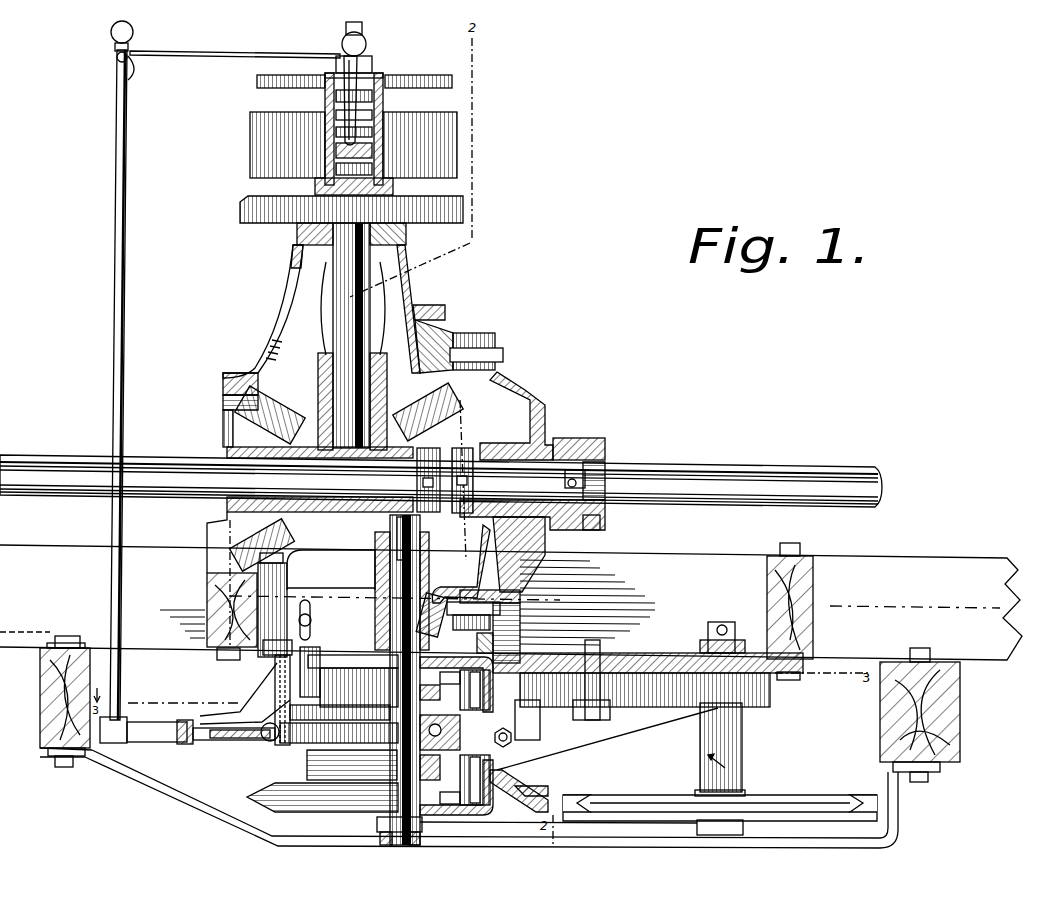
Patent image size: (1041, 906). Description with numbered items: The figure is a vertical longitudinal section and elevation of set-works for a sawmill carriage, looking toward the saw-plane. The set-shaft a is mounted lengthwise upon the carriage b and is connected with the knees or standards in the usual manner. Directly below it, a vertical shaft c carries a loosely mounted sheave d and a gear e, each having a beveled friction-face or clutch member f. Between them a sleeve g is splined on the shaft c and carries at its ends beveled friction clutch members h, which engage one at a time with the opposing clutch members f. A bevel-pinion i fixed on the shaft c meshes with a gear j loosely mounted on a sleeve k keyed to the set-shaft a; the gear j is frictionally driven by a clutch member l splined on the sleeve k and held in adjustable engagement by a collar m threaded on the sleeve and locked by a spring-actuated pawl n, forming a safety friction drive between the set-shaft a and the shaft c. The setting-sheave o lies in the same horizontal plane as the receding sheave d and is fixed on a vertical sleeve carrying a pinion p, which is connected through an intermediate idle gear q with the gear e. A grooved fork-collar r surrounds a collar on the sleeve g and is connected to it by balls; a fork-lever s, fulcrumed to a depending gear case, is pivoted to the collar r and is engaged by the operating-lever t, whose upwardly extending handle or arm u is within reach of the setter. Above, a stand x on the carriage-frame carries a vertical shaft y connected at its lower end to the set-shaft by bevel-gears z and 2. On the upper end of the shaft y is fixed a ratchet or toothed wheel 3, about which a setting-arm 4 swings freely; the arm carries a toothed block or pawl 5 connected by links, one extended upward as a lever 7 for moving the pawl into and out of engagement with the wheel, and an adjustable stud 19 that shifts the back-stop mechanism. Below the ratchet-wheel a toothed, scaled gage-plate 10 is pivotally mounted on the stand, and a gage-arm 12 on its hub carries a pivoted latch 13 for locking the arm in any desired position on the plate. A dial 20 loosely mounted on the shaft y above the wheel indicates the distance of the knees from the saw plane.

The bevel-gear 2 is at (240, 435).
The ratchet or toothed wheel 3 is at (252, 148).
The setting-arm 4 is at (328, 120).
The toothed block or pawl 5 is at (370, 132).
The lever 7 is at (340, 96).
The gage-plate 10 is at (242, 212).
The gage-arm 12 is at (309, 256).
The pivoted latch 13 is at (351, 234).
The adjustable stud 19 is at (305, 78).
The dial 20 is at (418, 78).
The set-shaft a is at (708, 470).
The carriage b is at (511, 662).
The vertical shaft c is at (390, 571).
The sheave d is at (252, 792).
The gear e is at (312, 670).
The friction-face or clutch member f is at (520, 653).
The sleeve g is at (339, 749).
The friction clutch members h is at (520, 765).
The bevel-pinion i is at (375, 600).
The gear j is at (450, 440).
The sleeve k is at (510, 442).
The clutch member l is at (480, 345).
The collar m is at (600, 445).
The spring-actuated pawl n is at (604, 481).
The setting-sheave o is at (720, 792).
The pinion p is at (735, 708).
The intermediate idle gear q is at (640, 700).
The fork-collar r is at (320, 712).
The fork-lever s is at (212, 740).
The operating-lever t is at (160, 722).
The handle or arm u is at (127, 250).
The stand x is at (286, 282).
The vertical shaft y is at (333, 290).
The bevel-gear z is at (278, 392).